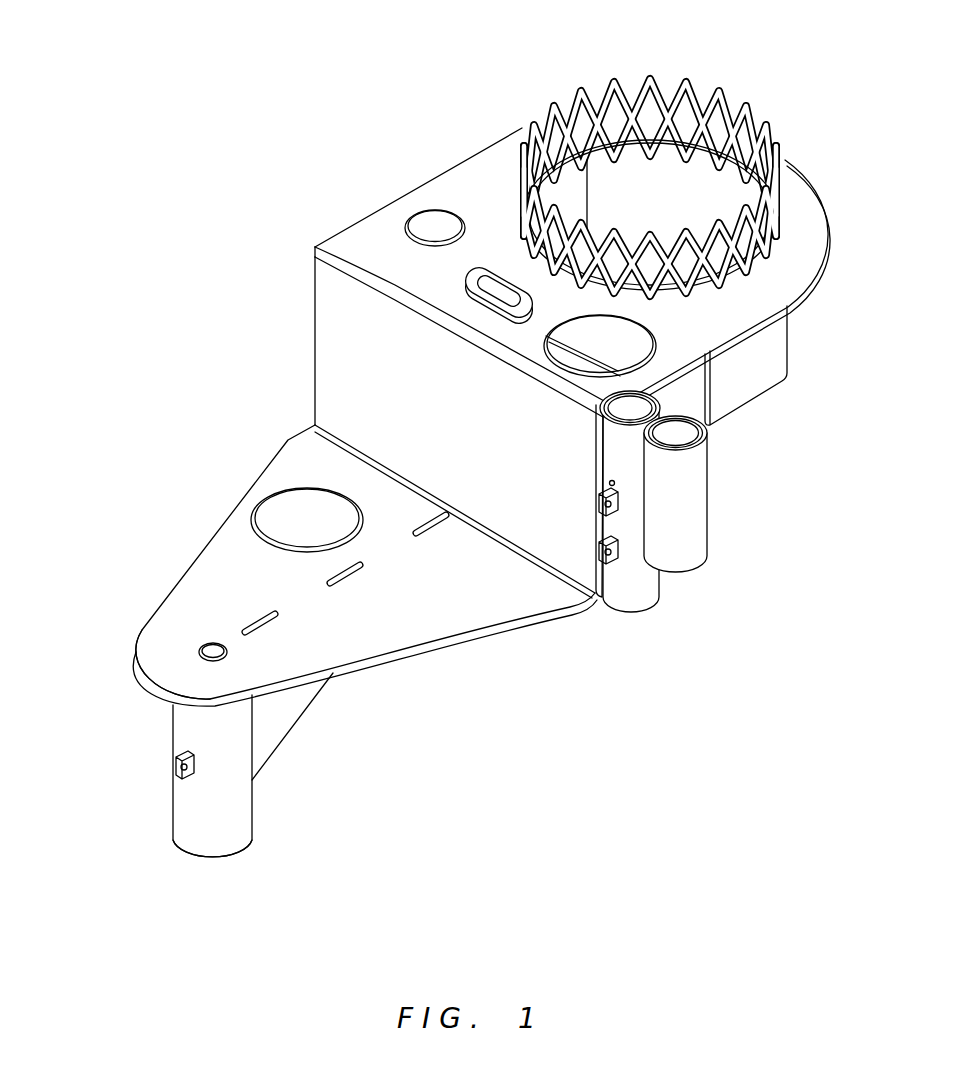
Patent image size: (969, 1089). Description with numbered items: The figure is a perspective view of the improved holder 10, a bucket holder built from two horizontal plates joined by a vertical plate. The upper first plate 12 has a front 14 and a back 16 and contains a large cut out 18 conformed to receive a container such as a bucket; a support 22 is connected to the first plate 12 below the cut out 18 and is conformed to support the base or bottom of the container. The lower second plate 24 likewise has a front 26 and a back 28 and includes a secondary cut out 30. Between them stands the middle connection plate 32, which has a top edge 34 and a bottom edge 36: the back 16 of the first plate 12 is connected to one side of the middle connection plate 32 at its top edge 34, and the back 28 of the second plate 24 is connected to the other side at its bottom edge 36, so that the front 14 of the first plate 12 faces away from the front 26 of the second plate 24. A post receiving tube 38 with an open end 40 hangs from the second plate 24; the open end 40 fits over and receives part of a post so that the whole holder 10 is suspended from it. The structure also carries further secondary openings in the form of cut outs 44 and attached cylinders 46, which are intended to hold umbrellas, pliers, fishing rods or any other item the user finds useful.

The improved holder 10 is at (123, 380).
The first plate 12 is at (803, 244).
The front 14 is at (780, 150).
The back 16 is at (358, 240).
The cut out 18 is at (645, 186).
The support 22 is at (790, 352).
The second plate 24 is at (410, 630).
The front 26 is at (140, 660).
The back 28 is at (457, 533).
The secondary cut out 30 is at (302, 523).
The middle connection plate 32 is at (447, 436).
The top edge 34 is at (313, 252).
The bottom edge 36 is at (598, 598).
The post receiving tube 38 is at (193, 820).
The open end 40 is at (205, 866).
The cut outs 44 is at (500, 284).
The attached cylinders 46 is at (632, 493).